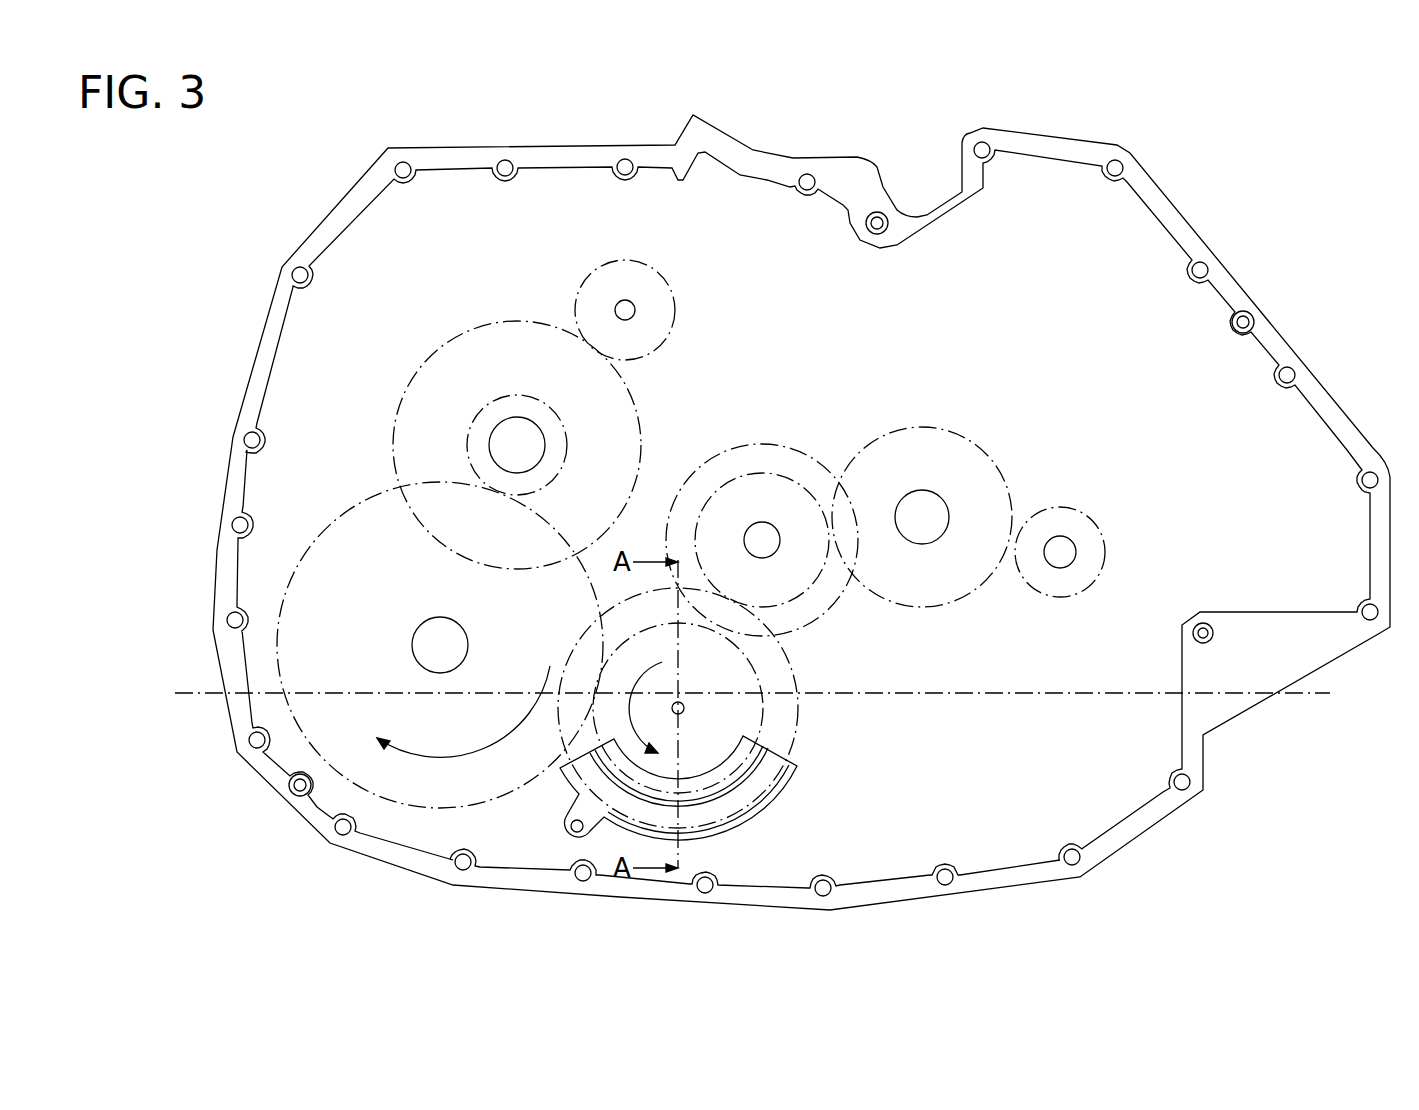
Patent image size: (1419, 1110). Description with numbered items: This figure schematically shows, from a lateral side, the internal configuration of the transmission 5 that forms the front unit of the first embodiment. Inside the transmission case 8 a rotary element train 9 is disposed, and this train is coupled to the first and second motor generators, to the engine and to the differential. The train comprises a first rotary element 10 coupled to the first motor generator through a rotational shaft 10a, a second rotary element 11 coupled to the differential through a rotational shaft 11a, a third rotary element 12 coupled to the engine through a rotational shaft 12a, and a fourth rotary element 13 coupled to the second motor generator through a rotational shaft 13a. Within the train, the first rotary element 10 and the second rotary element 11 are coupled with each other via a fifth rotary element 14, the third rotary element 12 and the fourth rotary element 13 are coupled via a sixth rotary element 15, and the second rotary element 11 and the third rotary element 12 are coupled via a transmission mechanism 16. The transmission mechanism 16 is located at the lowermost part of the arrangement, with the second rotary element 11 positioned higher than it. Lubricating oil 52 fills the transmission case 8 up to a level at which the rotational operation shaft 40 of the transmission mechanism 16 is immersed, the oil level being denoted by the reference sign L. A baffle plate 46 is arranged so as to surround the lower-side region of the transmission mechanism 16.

The transmission 5 is at (1053, 137).
The transmission case 8 is at (1162, 207).
The rotary element train 9 is at (688, 397).
The first rotary element 10 is at (607, 273).
The rotational shaft 10a is at (625, 302).
The second rotary element 11 is at (350, 535).
The rotational shaft 11a is at (423, 632).
The third rotary element 12 is at (753, 477).
The rotational shaft 12a is at (765, 527).
The fourth rotary element 13 is at (1060, 517).
The rotational shaft 13a is at (1068, 547).
The fifth rotary element 14 is at (463, 342).
The sixth rotary element 15 is at (948, 438).
The transmission mechanism 16 is at (740, 705).
The rotational operation shaft 40 is at (745, 752).
The baffle plate 46 is at (740, 800).
The lubricating oil 52 is at (1046, 762).
The oil level L is at (1293, 695).